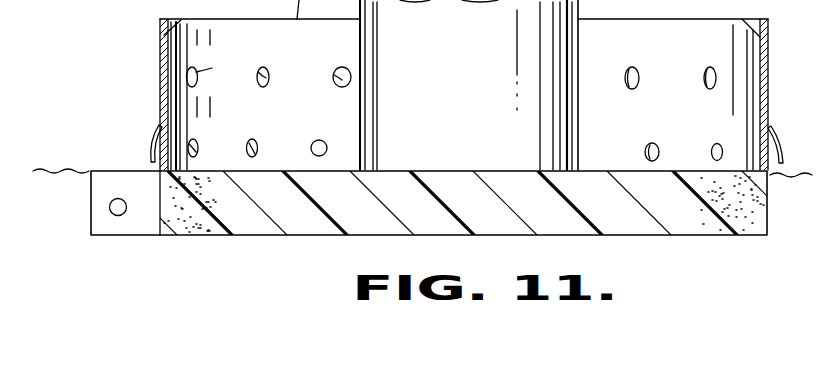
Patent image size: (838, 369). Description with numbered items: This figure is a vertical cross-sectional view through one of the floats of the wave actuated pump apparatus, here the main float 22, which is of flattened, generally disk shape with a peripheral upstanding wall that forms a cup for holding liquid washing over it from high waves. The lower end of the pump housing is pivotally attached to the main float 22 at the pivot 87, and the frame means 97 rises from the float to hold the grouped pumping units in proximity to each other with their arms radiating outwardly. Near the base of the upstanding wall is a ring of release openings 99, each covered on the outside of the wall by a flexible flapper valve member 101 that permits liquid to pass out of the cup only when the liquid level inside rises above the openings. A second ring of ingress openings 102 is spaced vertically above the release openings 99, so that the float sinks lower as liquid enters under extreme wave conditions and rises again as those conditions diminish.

The main float 22 is at (294, 237).
The pivotal attachment of pump housing 87 is at (117, 216).
The frame means 97 is at (487, 88).
The release openings 99 is at (317, 143).
The flapper valve members 101 is at (155, 135).
The ingress openings 102 is at (337, 78).